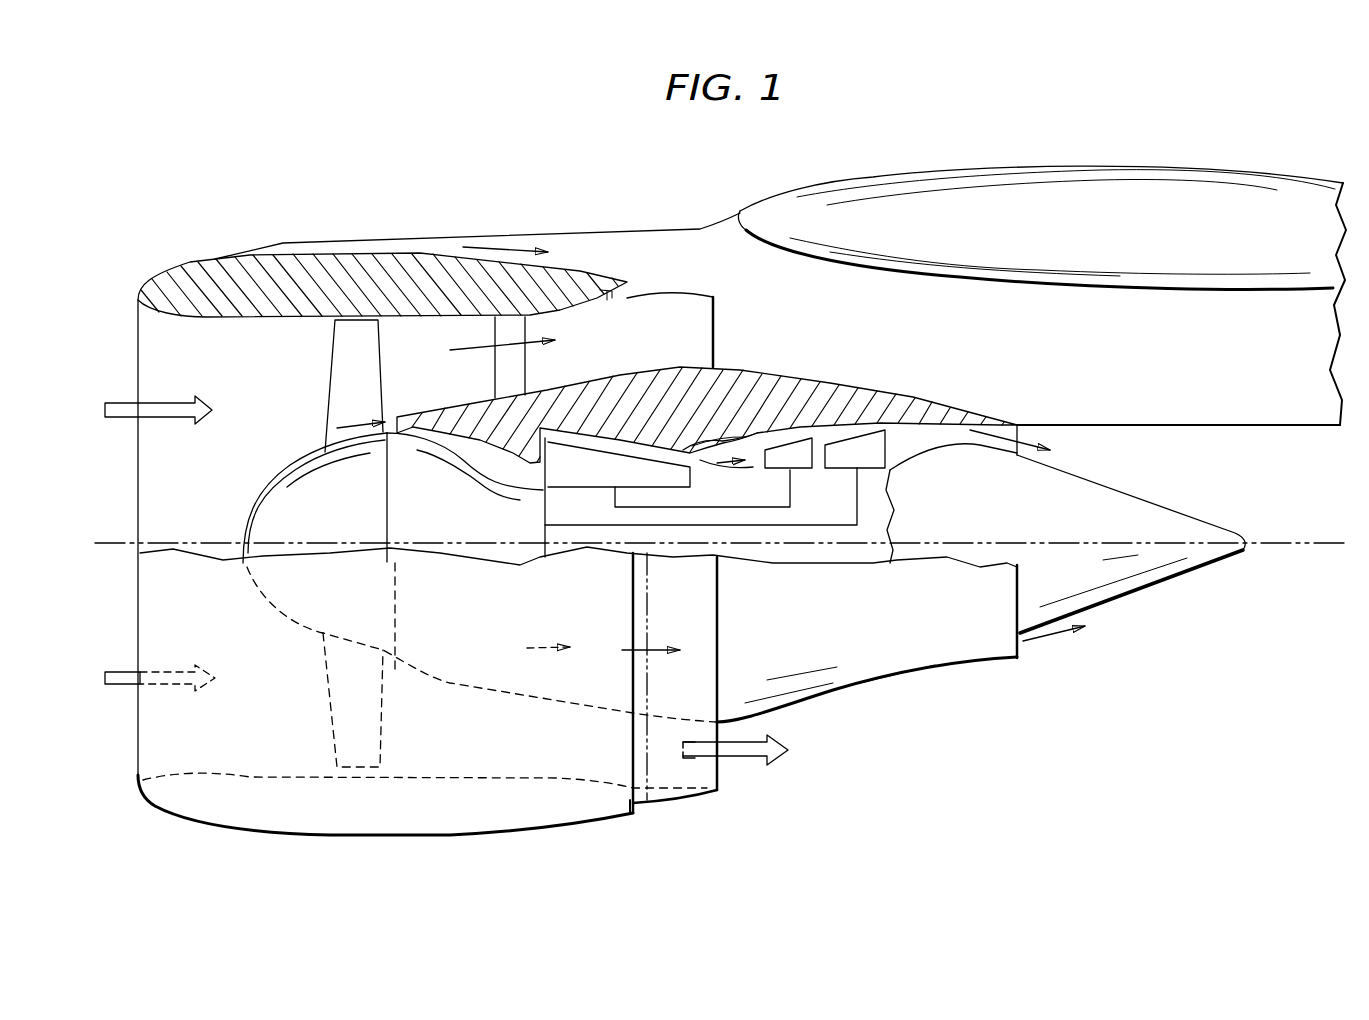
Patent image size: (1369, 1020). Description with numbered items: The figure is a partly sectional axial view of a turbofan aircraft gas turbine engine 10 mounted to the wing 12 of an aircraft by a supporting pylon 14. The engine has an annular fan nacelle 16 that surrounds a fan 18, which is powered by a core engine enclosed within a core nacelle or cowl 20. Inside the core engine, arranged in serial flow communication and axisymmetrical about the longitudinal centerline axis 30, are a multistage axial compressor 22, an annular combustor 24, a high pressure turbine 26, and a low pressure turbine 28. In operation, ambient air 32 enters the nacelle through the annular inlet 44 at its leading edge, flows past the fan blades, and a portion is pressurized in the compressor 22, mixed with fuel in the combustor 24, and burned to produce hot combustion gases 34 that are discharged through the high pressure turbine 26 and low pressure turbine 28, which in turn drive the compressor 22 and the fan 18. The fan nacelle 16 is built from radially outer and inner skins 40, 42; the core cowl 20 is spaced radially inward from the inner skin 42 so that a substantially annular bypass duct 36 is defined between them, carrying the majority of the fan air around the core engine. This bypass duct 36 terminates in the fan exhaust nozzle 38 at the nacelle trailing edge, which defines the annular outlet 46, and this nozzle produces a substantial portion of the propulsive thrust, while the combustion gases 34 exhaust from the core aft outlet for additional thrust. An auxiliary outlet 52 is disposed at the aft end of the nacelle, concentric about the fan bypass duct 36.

The turbofan aircraft gas turbine engine 10 is at (241, 228).
The wing 12 is at (905, 175).
The supporting pylon 14 is at (1160, 368).
The fan nacelle 16 is at (197, 826).
The fan 18 is at (330, 377).
The core nacelle or cowl 20 is at (913, 397).
The multistage axial compressor 22 is at (566, 468).
The annular combustor 24 is at (733, 483).
The high pressure turbine 26 is at (797, 472).
The low pressure turbine 28 is at (873, 470).
The axial centerline axis 30 is at (1298, 549).
The ambient air 32 is at (487, 246).
The combustion gases 34 is at (1033, 645).
The bypass duct 36 is at (448, 391).
The fan exhaust nozzle 38 is at (615, 252).
The outer cowling or skin 40 is at (353, 258).
The inner cowling or skin 42 is at (457, 318).
The annular inlet 44 is at (138, 353).
The annular outlet 46 is at (718, 325).
The auxiliary outlet 52 is at (635, 805).